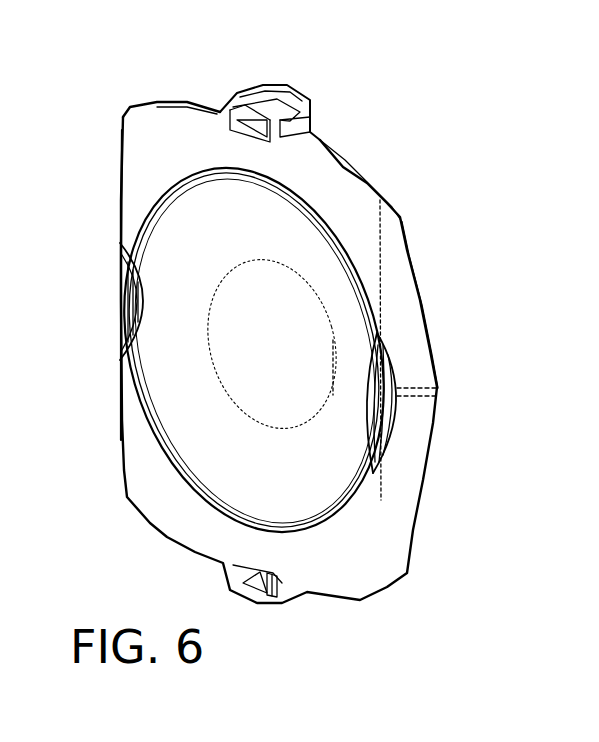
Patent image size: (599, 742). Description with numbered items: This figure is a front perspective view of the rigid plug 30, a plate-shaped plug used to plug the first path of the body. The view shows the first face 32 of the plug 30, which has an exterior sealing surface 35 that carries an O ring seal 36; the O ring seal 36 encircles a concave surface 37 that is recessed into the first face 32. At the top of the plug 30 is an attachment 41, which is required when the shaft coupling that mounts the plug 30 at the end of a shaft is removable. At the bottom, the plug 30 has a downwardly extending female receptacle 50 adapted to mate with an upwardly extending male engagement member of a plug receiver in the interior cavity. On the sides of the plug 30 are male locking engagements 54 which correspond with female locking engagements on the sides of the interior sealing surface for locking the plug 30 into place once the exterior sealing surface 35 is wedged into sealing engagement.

The rigid plug 30 is at (357, 163).
The first face 32 is at (132, 175).
The exterior sealing surface 35 is at (153, 131).
The O ring seal 36 is at (167, 455).
The concave surface 37 is at (173, 382).
The attachment 41 is at (318, 97).
The female receptacle 50 is at (268, 603).
The male locking engagement 54 is at (118, 310).